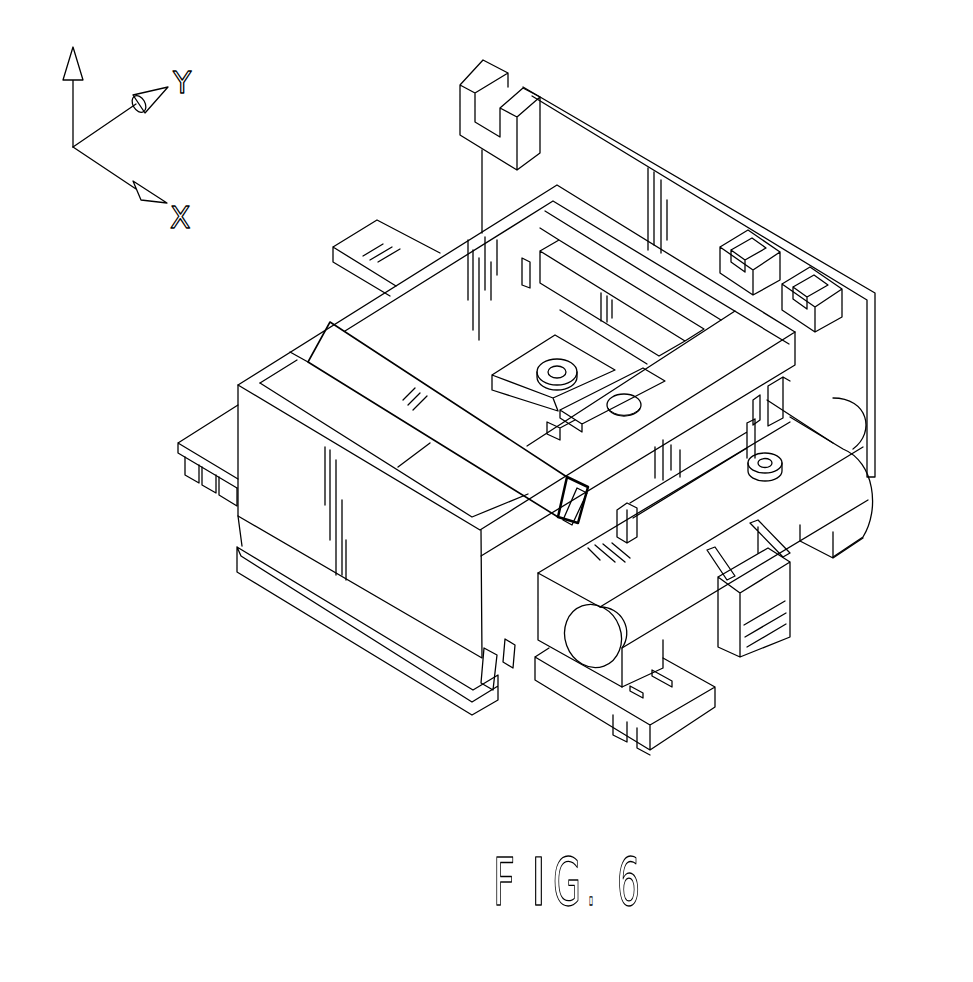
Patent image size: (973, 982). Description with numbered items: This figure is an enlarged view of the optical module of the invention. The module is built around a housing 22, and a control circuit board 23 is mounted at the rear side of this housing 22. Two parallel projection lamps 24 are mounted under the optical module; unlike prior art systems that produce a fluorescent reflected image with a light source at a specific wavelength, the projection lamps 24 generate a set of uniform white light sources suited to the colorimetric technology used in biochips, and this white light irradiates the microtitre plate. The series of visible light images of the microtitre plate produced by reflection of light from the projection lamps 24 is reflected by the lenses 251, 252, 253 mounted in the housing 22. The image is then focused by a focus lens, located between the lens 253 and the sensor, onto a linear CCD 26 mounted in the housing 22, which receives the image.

The housing 22 is at (462, 290).
The control circuit board 23 is at (670, 197).
The projection lamps 24 is at (670, 703).
The linear CCD 26 is at (560, 353).
The lens 251 is at (332, 355).
The lens 252 is at (657, 333).
The lens 253 is at (438, 645).